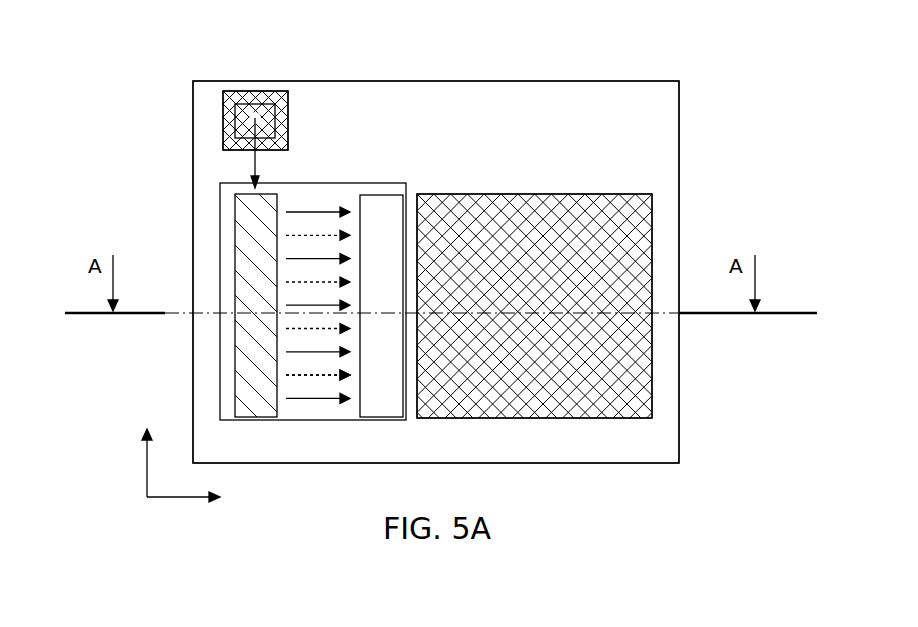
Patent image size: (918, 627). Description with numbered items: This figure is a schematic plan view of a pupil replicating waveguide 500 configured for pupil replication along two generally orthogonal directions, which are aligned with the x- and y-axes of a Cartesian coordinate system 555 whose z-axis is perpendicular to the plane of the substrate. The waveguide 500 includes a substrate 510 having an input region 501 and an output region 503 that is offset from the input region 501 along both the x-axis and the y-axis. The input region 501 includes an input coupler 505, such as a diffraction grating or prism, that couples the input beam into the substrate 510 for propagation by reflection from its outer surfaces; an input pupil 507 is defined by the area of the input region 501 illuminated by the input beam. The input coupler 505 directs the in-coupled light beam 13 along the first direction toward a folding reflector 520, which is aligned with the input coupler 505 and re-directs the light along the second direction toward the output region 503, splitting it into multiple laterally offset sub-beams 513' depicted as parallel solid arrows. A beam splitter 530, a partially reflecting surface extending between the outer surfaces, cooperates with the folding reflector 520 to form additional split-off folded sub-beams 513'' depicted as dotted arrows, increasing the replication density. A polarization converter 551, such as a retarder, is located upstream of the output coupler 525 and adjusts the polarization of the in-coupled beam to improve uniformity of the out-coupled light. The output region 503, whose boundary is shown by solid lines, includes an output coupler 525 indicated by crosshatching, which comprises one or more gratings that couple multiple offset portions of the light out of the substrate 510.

The waveguide 500 is at (487, 30).
The substrate 510 is at (627, 117).
The input region 501 is at (233, 79).
The input coupler 505 is at (255, 91).
The input pupil 507 is at (288, 121).
The in-coupled light beam 13 is at (258, 163).
The folding reflector 520 is at (240, 193).
The polarization converter 551 is at (384, 185).
The beam splitter 530 is at (390, 190).
The output coupler 525 is at (455, 193).
The output region 503 is at (563, 430).
The laterally offset sub-beams 513' is at (335, 334).
The split-off folded sub-beams 513'' is at (283, 416).
The Cartesian coordinate system 555 is at (140, 515).